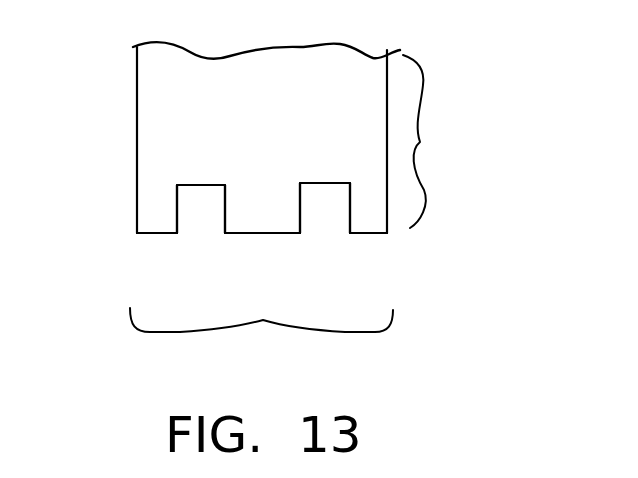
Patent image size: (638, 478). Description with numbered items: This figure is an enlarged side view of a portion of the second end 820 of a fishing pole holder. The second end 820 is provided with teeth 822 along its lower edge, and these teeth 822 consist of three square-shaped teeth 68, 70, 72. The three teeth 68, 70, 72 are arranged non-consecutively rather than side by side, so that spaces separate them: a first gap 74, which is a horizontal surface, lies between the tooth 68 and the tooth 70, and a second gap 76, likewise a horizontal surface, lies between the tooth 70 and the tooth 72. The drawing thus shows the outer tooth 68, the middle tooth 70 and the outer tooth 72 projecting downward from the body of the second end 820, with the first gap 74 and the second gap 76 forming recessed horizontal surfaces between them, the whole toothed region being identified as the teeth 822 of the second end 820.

The second end 820 is at (420, 142).
The teeth 822 is at (261, 336).
The tooth 68 is at (146, 240).
The tooth 70 is at (261, 244).
The tooth 72 is at (369, 244).
The first gap 74 is at (198, 204).
The second gap 76 is at (324, 204).